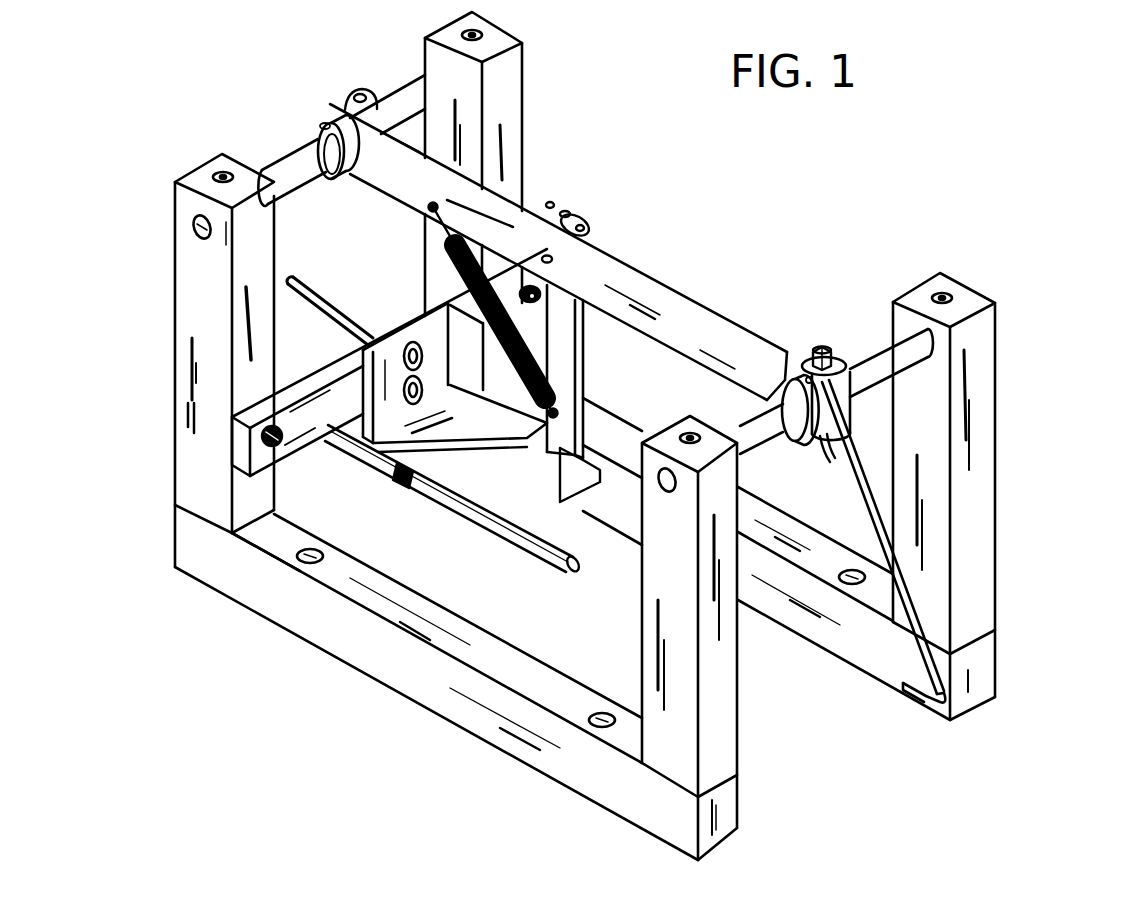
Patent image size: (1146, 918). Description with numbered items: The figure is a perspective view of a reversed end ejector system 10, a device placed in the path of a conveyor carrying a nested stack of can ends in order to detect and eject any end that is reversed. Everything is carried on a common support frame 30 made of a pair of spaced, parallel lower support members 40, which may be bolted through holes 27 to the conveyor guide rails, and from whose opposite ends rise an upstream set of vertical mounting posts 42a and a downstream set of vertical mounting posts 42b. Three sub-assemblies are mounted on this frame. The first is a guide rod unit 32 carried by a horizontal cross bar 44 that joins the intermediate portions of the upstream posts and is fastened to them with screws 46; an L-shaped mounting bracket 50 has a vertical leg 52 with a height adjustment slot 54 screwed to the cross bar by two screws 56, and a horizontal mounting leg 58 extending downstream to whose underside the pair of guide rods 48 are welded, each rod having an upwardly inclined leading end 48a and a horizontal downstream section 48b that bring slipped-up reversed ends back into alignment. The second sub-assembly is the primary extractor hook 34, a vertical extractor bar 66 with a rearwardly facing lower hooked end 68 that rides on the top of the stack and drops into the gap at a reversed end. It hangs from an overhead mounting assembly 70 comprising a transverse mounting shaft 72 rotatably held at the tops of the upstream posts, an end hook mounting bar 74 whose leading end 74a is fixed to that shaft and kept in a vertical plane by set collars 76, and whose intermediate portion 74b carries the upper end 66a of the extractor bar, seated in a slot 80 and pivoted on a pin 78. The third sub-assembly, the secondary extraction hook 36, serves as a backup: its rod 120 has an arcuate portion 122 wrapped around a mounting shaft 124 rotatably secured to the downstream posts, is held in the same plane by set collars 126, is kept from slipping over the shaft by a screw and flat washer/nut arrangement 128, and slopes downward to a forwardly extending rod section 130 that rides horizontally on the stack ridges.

The reversed end ejector system 10 is at (1103, 428).
The holes 27 is at (310, 563).
The support frame 30 is at (287, 647).
The guide rod unit 32 is at (461, 561).
The primary extractor hook 34 is at (542, 310).
The secondary extraction hook 36 is at (838, 394).
The lower support members 40 is at (552, 688).
The upstream vertical mounting posts 42a is at (510, 104).
The downstream vertical mounting posts 42b is at (728, 733).
The horizontal cross bar 44 is at (303, 428).
The screws 46 is at (262, 441).
The guide rods 48 is at (522, 530).
The leading end 48a is at (308, 288).
The horizontal downstream section 48b is at (560, 563).
The L-shaped mounting bracket 50 is at (432, 457).
The vertical leg 52 is at (390, 340).
The height adjustment slot 54 is at (452, 399).
The screws 56 is at (414, 342).
The horizontal mounting leg 58 is at (464, 461).
The vertical extractor bar 66 is at (596, 371).
The upper end 66a is at (568, 212).
The lower hooked end 68 is at (582, 463).
The overhead mounting assembly 70 is at (715, 204).
The transverse mounting shaft 72 is at (421, 86).
The end hook mounting bar 74 is at (718, 356).
The leading end 74a is at (343, 102).
The intermediate portion 74b is at (591, 240).
The set collars 76 is at (310, 132).
The pin 78 is at (552, 263).
The slot 80 is at (565, 165).
The rod 120 is at (869, 521).
The arcuate portion 122 is at (852, 392).
The mounting shaft 124 is at (770, 443).
The set collars 126 is at (830, 443).
The screw and flat washer/nut arrangement 128 is at (842, 318).
The forwardly extending rod section 130 is at (922, 700).